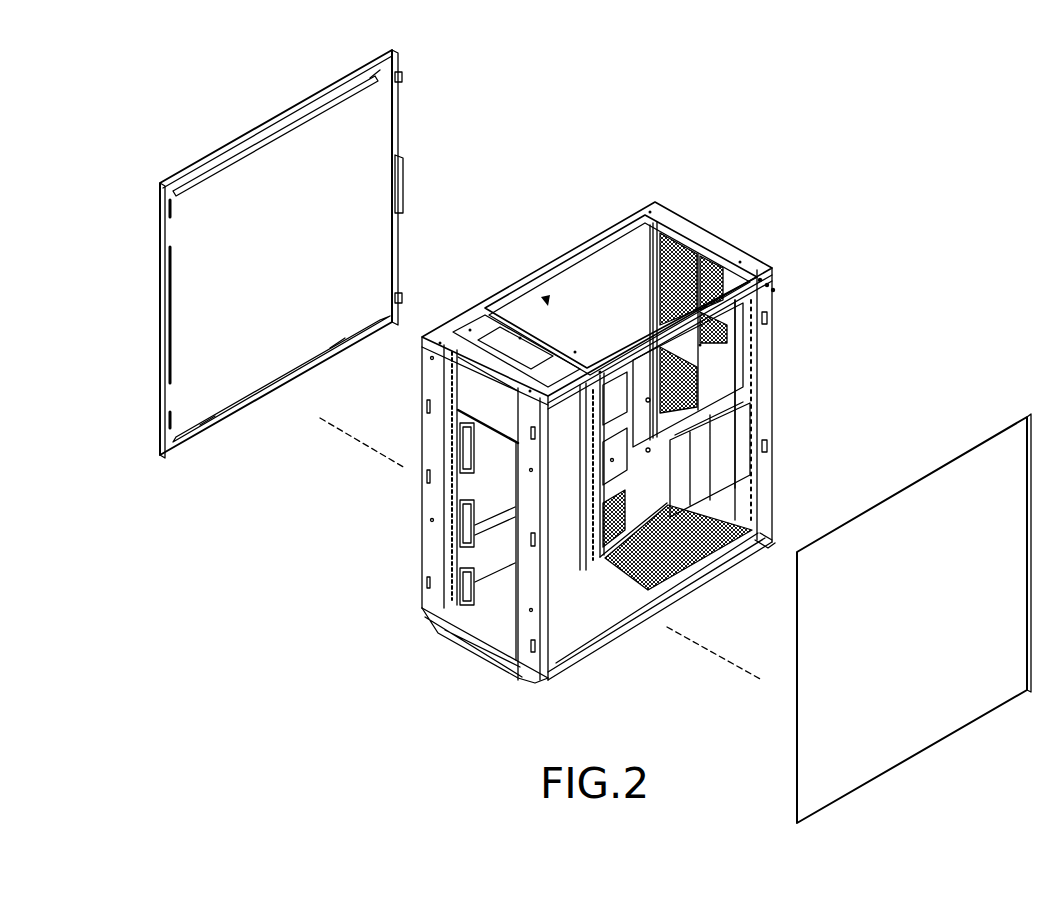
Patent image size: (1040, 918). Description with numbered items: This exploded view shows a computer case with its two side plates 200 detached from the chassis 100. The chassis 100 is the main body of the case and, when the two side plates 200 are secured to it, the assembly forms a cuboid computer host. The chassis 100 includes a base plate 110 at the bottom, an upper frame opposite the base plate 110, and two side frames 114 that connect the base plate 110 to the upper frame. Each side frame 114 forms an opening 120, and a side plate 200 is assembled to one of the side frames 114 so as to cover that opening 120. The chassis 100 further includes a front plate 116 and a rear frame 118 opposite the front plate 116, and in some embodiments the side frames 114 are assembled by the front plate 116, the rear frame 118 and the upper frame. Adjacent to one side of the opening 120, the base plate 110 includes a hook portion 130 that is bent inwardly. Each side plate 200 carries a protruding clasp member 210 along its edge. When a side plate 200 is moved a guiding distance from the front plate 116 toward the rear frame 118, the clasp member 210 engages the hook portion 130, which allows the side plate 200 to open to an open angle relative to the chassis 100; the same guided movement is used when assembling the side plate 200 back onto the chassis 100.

The chassis 100 is at (578, 262).
The base plate 110 is at (493, 608).
The side frame 114 is at (690, 322).
The front plate 116 is at (433, 593).
The rear frame 118 is at (694, 249).
The opening 120 is at (546, 300).
The hook portion 130 is at (472, 550).
The side plate 200 is at (595, 436).
The clasp member 210 is at (230, 413).